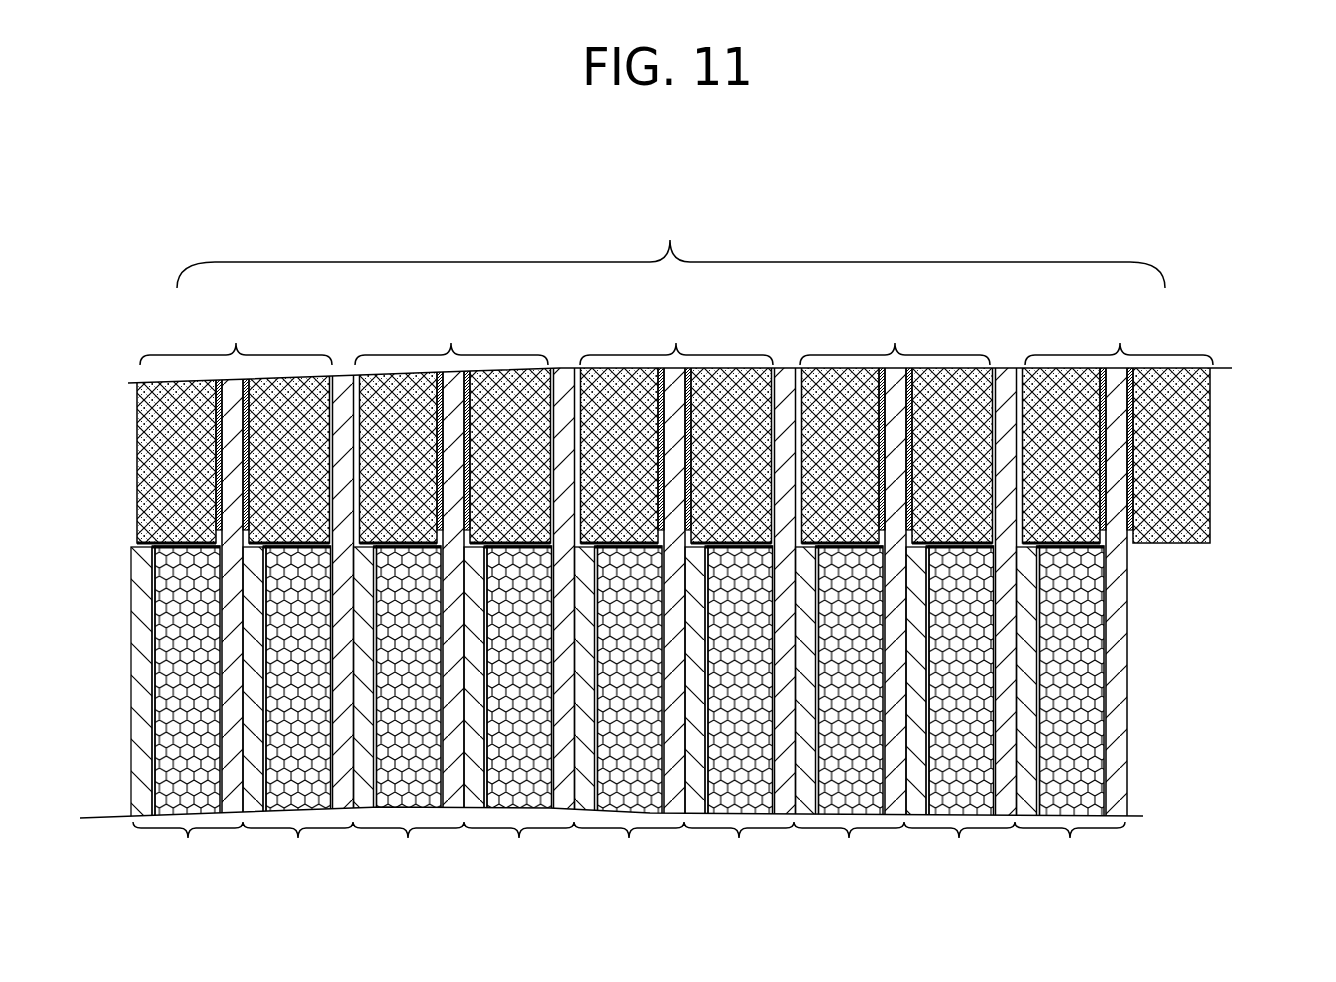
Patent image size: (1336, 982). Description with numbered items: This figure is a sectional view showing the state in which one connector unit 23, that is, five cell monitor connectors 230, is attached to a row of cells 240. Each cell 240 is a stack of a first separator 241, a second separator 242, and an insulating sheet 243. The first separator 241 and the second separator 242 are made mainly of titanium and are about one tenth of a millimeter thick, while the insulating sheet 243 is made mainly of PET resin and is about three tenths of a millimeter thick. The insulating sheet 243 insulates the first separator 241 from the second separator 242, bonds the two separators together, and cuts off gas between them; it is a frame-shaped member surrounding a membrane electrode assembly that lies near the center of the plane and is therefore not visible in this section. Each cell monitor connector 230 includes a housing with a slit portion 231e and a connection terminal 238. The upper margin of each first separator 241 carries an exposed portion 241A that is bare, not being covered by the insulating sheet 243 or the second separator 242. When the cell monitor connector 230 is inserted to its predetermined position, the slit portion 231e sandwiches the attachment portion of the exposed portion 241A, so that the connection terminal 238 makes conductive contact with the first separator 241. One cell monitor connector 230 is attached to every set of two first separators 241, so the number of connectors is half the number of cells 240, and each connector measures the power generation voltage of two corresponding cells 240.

The connector unit 23 is at (728, 371).
The cell monitor connector 230 is at (728, 425).
The connection terminal 238 is at (1137, 422).
The slit portion 231e is at (1122, 477).
The exposed portion 241A is at (1113, 532).
The first separator 241 is at (1118, 610).
The second separator 242 is at (1037, 695).
The insulating sheet 243 is at (1067, 778).
The cell 240 is at (690, 713).